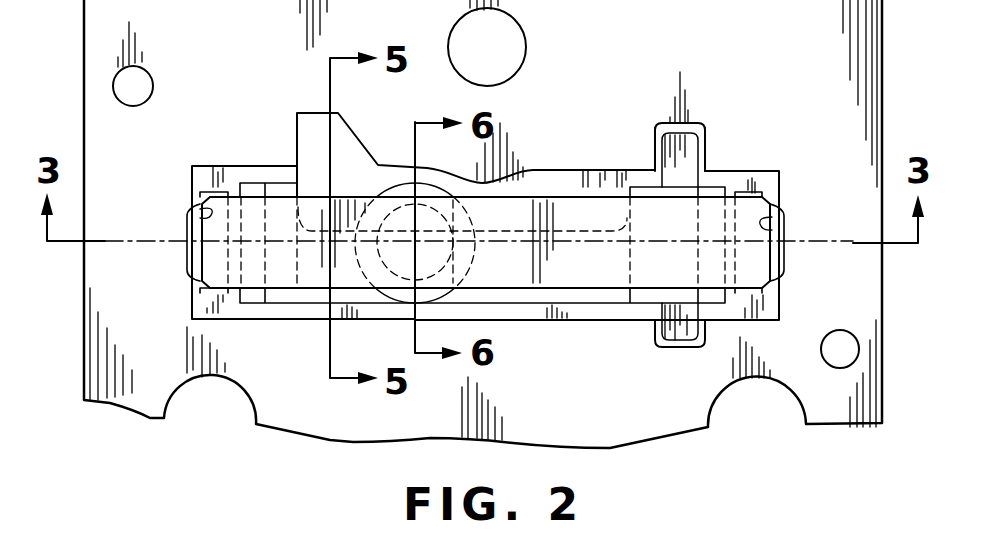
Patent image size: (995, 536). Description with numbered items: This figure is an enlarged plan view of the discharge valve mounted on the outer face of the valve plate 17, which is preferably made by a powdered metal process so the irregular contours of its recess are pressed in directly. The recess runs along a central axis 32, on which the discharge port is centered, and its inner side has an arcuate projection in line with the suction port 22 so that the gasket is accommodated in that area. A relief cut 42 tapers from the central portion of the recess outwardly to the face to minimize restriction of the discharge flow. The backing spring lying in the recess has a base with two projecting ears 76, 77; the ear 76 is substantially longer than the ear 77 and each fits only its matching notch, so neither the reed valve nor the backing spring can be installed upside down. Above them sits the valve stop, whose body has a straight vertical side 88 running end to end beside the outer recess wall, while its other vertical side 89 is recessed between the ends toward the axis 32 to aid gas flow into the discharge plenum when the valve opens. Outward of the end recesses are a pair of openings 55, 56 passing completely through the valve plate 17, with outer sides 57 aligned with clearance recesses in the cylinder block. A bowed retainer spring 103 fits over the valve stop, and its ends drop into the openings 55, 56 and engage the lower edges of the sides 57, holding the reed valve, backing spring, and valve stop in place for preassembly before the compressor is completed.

The valve plate 17 is at (635, 422).
The suction port 22 is at (520, 31).
The central axis 32 is at (690, 243).
The relief cut 42 is at (312, 137).
The opening 55 is at (208, 185).
The opening 56 is at (757, 182).
The outer sides 57 is at (767, 228).
The ear 76 is at (677, 157).
The ear 77 is at (688, 332).
The straight vertical side 88 is at (528, 307).
The recessed vertical side 89 is at (587, 213).
The retainer spring 103 is at (507, 213).